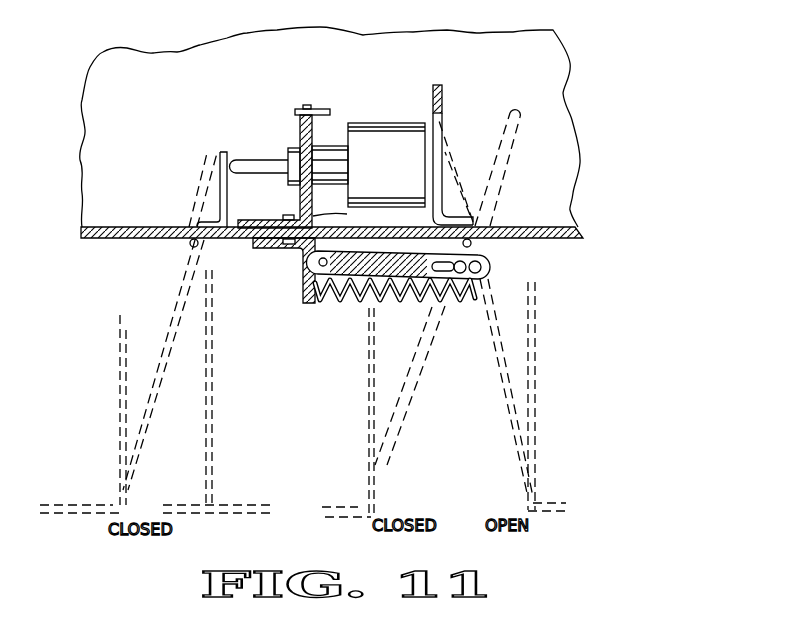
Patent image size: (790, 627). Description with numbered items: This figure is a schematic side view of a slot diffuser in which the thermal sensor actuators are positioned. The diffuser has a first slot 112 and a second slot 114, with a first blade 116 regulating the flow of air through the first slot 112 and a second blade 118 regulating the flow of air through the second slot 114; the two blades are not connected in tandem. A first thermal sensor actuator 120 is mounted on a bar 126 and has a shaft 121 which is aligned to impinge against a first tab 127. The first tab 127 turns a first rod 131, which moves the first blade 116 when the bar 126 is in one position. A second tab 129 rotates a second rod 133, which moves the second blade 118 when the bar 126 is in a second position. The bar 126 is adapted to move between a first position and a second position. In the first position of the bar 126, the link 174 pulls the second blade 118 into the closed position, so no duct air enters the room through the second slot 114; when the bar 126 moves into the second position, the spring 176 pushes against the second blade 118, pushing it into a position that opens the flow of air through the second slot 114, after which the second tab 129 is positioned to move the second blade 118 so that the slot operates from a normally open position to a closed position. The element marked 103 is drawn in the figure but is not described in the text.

The shaft 103 is at (297, 108).
The first slot 112 is at (138, 329).
The second slot 114 is at (468, 343).
The first blade 116 is at (172, 317).
The second blade 118 is at (507, 387).
The first thermal sensor actuator 120 is at (396, 128).
The shaft 121 is at (263, 163).
The bar 126 is at (347, 214).
The first tab 127 is at (219, 155).
The second tab 129 is at (479, 54).
The first rod 131 is at (189, 245).
The second rod 133 is at (472, 246).
The link 174 is at (388, 253).
The spring 176 is at (357, 303).